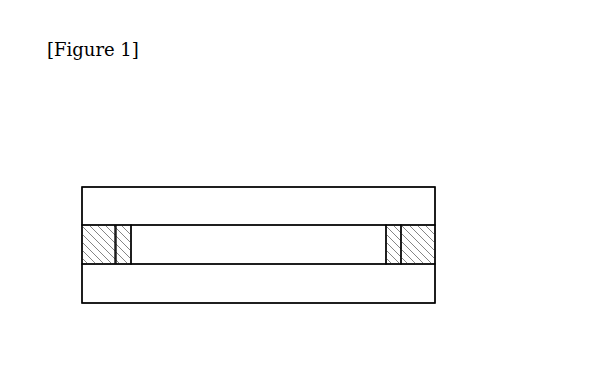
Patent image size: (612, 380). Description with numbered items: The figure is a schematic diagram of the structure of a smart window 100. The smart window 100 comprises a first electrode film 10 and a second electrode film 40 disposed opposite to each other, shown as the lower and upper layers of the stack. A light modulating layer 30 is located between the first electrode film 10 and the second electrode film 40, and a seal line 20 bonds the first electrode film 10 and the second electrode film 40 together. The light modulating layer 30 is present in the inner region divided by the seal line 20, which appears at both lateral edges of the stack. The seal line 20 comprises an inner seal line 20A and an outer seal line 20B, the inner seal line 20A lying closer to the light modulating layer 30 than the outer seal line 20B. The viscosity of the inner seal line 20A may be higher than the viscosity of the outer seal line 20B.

The smart window 100 is at (138, 162).
The first electrode film 10 is at (416, 281).
The seal line 20 is at (299, 244).
The inner seal line 20A is at (389, 236).
The outer seal line 20B is at (415, 250).
The light modulating layer 30 is at (263, 245).
The second electrode film 40 is at (416, 202).